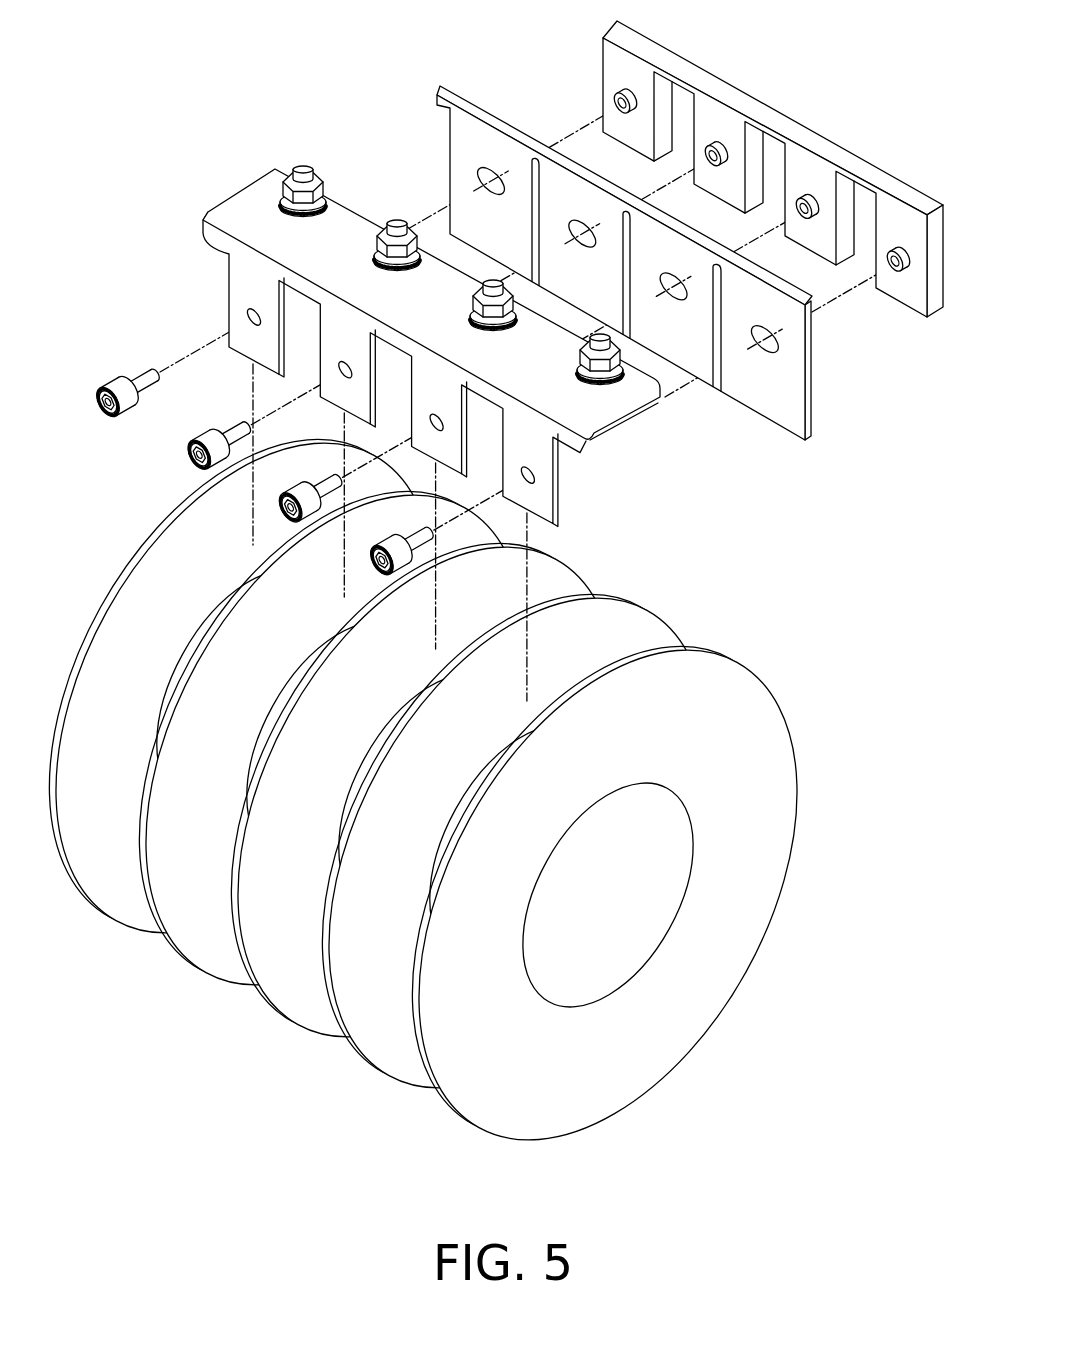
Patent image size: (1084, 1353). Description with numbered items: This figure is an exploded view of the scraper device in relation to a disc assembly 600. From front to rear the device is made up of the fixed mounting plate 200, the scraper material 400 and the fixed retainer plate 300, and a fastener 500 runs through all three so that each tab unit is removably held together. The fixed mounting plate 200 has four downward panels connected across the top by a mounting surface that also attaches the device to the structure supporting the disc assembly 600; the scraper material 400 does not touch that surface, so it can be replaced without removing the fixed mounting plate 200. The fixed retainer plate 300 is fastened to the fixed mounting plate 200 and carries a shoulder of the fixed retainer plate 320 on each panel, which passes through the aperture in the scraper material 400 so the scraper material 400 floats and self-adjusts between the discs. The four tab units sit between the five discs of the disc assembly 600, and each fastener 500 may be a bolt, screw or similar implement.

The fixed mounting plate 200 is at (592, 407).
The fixed retainer plate 300 is at (630, 72).
The shoulder of the fixed retainer plate 320 is at (905, 272).
The scraper material 400 is at (770, 387).
The fastener 500 is at (140, 380).
The disc assembly 600 is at (637, 1040).